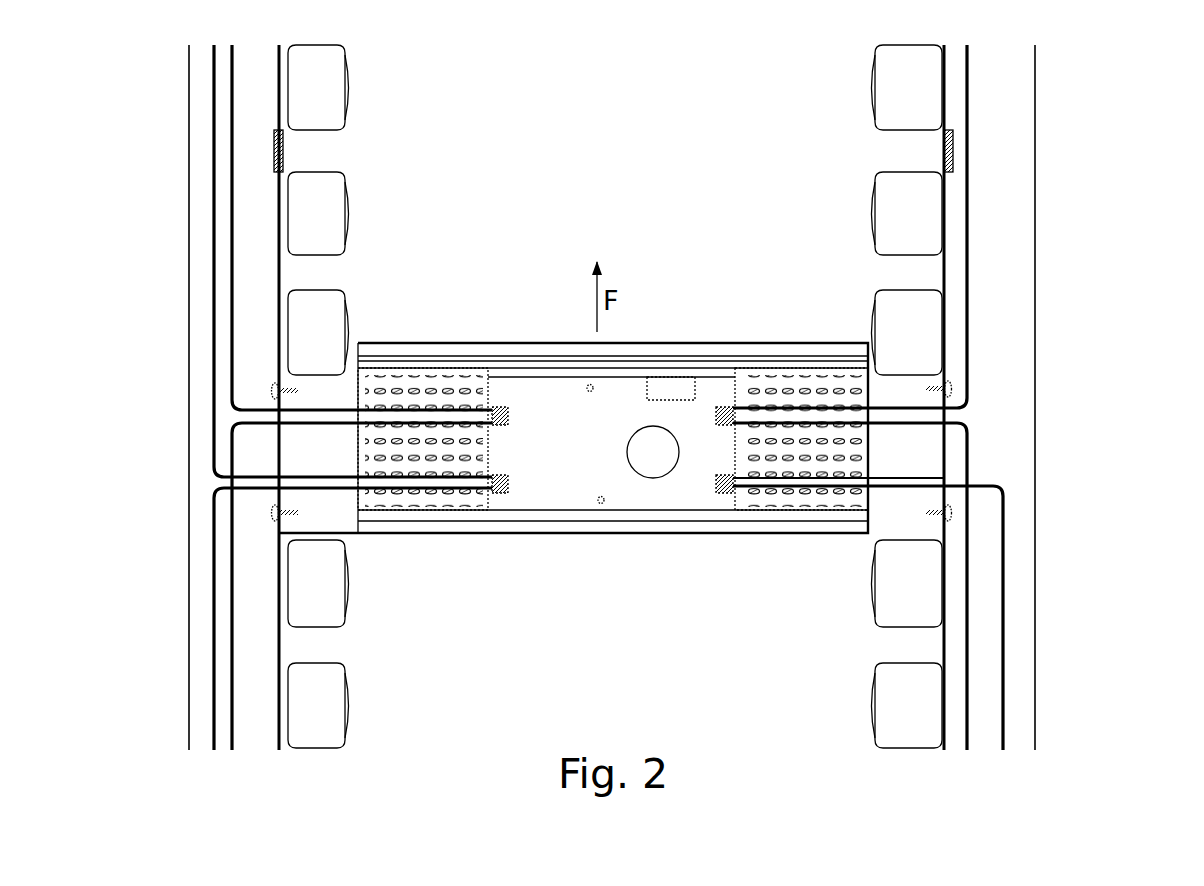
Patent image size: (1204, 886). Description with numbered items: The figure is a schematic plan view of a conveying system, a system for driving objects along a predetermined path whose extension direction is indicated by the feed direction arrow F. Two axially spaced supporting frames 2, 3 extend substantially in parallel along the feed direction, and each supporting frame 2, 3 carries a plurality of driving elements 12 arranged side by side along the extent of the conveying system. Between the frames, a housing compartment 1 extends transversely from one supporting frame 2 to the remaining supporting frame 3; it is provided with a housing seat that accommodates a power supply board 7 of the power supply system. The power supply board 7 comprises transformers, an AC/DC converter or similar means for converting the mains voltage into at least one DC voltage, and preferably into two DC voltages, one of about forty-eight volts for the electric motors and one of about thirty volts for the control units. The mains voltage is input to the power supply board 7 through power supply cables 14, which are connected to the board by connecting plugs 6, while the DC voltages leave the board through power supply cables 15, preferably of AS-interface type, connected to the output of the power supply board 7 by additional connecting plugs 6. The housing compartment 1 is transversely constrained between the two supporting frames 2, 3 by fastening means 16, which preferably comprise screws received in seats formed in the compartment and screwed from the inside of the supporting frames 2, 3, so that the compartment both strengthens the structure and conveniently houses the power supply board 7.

The housing compartment 1 is at (790, 542).
The supporting frame 2 is at (1046, 124).
The supporting frame 3 is at (184, 123).
The connecting plug 6 is at (500, 402).
The power supply board 7 is at (572, 535).
The driving element 12 is at (315, 755).
The power supply cable 14 is at (977, 389).
The power supply cable 15 is at (225, 389).
The fastening means 16 is at (273, 382).